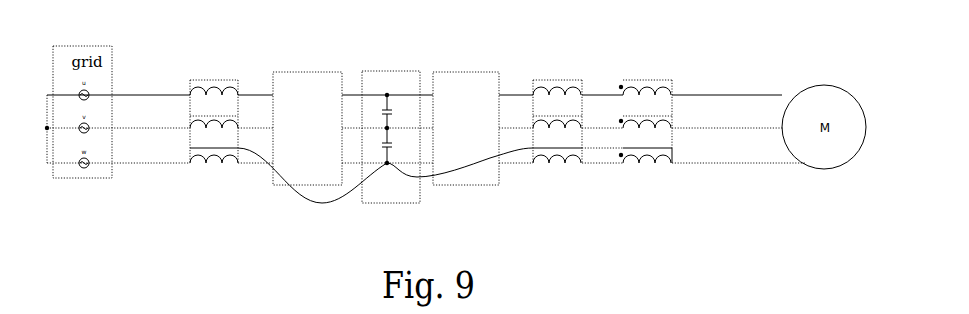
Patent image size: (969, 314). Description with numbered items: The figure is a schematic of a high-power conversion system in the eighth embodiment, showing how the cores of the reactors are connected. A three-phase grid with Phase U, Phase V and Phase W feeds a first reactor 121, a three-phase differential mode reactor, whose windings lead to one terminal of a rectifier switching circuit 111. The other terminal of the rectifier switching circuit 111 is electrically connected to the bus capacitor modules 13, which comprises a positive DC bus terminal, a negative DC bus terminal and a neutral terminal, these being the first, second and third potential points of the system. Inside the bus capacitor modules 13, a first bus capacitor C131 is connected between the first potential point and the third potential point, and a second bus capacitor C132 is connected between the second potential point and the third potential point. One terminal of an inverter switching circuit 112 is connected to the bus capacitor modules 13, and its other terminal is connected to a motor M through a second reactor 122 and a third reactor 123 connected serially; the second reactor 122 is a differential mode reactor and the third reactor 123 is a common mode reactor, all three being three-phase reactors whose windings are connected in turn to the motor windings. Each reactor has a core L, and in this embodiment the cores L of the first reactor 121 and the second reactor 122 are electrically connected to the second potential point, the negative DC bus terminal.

The bus capacitor modules 13 is at (397, 114).
The rectifier switching circuit 111 is at (302, 82).
The inverter switching circuit 112 is at (447, 82).
The first reactor 121 is at (197, 84).
The second reactor 122 is at (538, 84).
The third reactor 123 is at (628, 84).
The core L is at (238, 79).
The first bus capacitor C131 is at (399, 111).
The second bus capacitor C132 is at (399, 145).